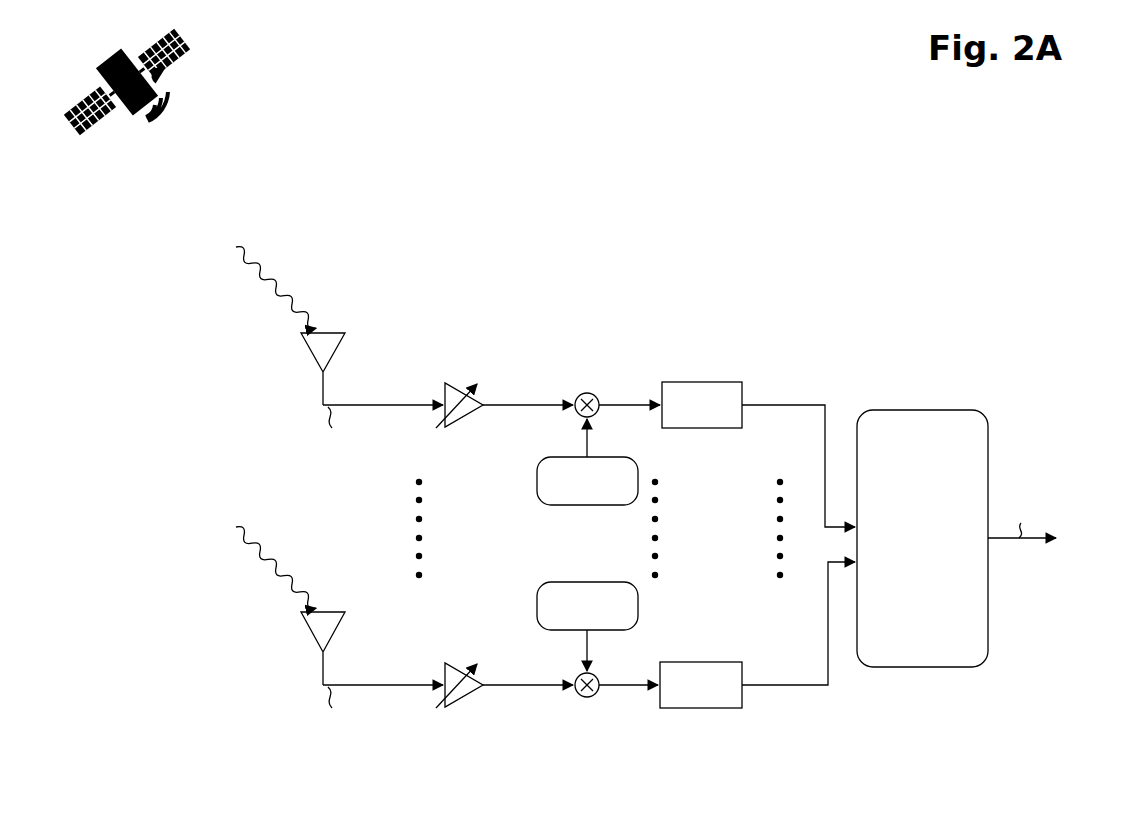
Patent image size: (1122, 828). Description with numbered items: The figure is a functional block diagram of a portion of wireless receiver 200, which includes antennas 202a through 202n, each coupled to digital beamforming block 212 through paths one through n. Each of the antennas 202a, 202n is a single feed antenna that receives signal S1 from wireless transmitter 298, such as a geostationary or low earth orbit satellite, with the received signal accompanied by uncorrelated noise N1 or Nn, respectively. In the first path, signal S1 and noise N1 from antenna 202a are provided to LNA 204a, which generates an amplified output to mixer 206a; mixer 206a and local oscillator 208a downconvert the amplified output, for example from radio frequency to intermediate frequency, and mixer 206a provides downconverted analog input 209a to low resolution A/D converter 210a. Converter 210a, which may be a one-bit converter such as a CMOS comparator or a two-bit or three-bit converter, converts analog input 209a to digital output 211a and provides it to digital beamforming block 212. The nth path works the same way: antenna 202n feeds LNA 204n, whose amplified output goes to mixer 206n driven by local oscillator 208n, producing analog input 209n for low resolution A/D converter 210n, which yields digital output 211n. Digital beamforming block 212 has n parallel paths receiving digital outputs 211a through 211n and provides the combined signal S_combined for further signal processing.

The wireless transmitter 298 is at (104, 58).
The wireless receiver 200 is at (922, 206).
The antenna 202a is at (345, 348).
The antenna 202n is at (345, 628).
The LNA 204a is at (462, 386).
The LNA 204n is at (462, 668).
The mixer 206a is at (587, 392).
The mixer 206n is at (588, 698).
The local oscillator 208a is at (587, 462).
The local oscillator 208n is at (587, 626).
The analog input 209a is at (652, 410).
The analog input 209n is at (641, 680).
The low resolution A/D converter 210a is at (704, 382).
The low resolution A/D converter 210n is at (704, 662).
The digital output 211a is at (778, 410).
The digital output 211n is at (782, 684).
The digital beamforming block 212 is at (968, 538).